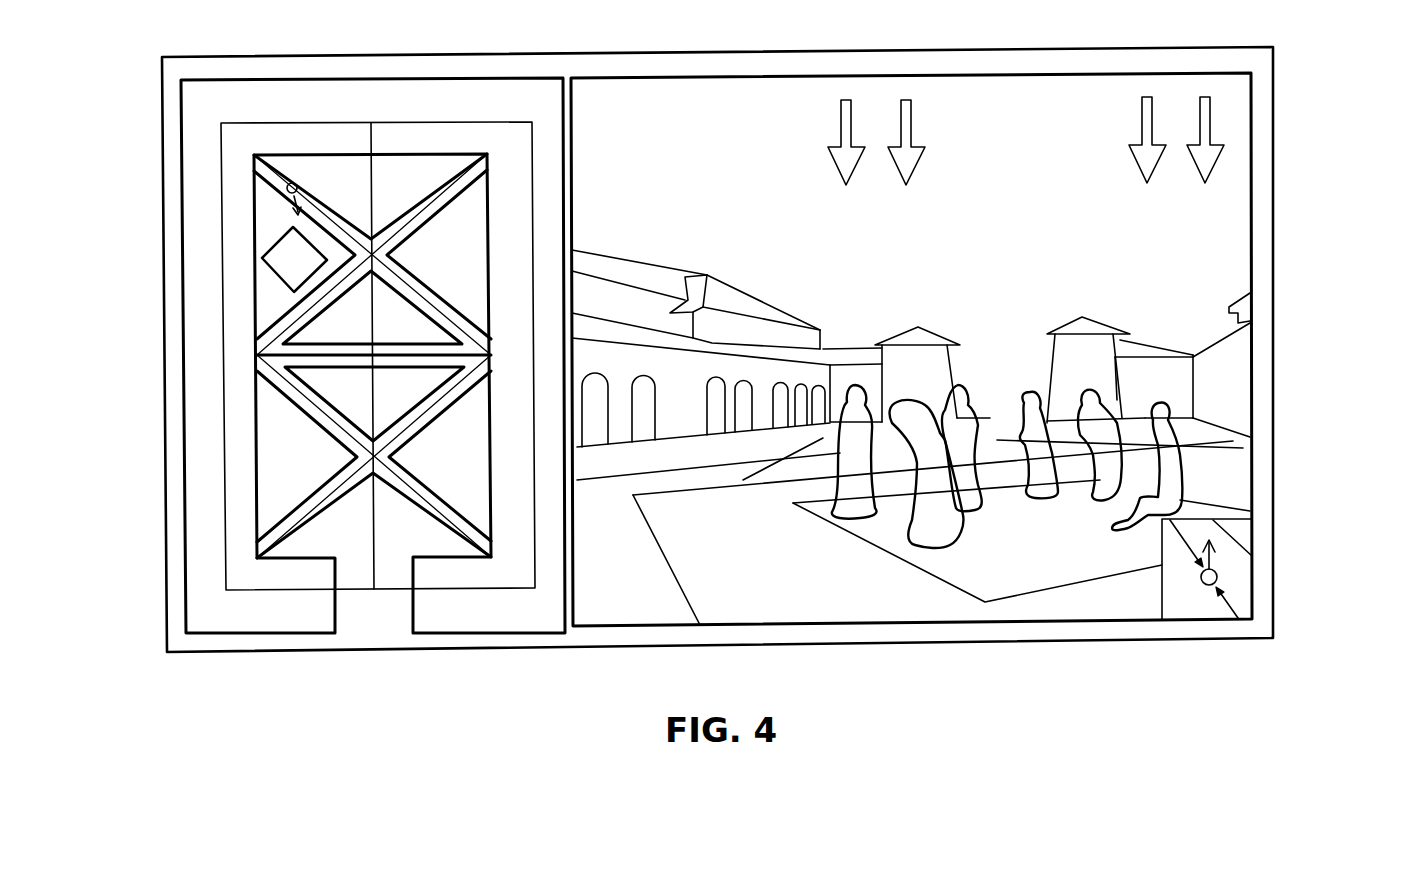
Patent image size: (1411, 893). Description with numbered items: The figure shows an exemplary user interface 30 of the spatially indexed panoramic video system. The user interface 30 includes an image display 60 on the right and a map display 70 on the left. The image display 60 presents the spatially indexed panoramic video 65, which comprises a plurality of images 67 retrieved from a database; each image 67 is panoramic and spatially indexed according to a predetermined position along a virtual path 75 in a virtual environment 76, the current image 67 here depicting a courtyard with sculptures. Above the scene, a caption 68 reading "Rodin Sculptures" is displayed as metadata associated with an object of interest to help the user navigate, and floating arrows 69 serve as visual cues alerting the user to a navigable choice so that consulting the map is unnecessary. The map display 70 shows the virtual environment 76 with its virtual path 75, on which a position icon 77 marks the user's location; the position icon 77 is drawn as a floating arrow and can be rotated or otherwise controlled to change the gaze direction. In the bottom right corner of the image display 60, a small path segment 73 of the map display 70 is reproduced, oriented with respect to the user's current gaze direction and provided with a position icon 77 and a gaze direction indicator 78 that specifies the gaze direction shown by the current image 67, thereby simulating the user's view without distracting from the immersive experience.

The user interface 30 is at (1330, 92).
The image display 60 is at (1232, 223).
The spatially indexed panoramic video 65 is at (1232, 275).
The image 67 is at (1233, 344).
The caption 68 is at (1017, 110).
The floating arrows 69 is at (847, 97).
The map display 70 is at (268, 304).
The path segment 73 is at (1187, 607).
The virtual path 75 is at (303, 398).
The virtual environment 76 is at (112, 195).
The position icon 77 is at (302, 181).
The gaze direction indicator 78 is at (1214, 548).